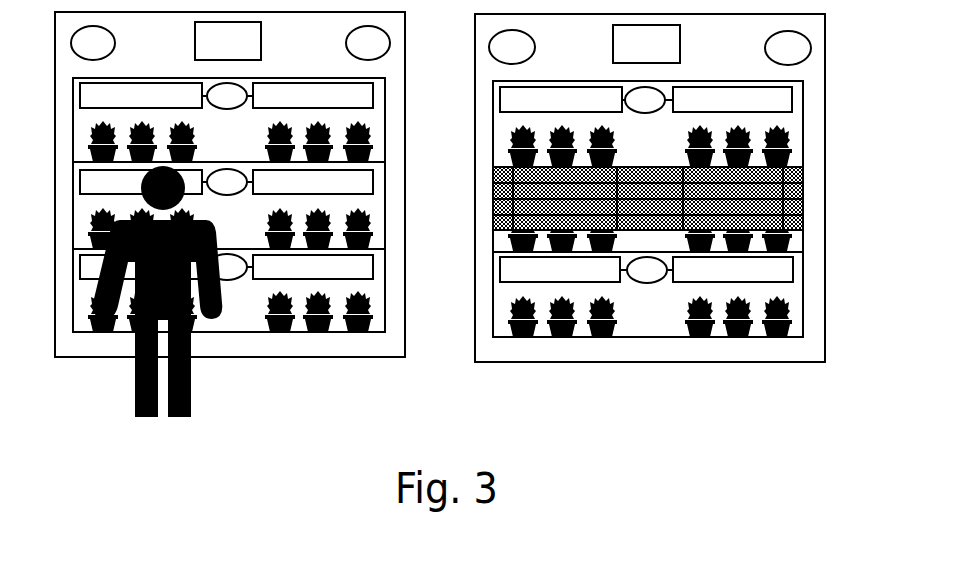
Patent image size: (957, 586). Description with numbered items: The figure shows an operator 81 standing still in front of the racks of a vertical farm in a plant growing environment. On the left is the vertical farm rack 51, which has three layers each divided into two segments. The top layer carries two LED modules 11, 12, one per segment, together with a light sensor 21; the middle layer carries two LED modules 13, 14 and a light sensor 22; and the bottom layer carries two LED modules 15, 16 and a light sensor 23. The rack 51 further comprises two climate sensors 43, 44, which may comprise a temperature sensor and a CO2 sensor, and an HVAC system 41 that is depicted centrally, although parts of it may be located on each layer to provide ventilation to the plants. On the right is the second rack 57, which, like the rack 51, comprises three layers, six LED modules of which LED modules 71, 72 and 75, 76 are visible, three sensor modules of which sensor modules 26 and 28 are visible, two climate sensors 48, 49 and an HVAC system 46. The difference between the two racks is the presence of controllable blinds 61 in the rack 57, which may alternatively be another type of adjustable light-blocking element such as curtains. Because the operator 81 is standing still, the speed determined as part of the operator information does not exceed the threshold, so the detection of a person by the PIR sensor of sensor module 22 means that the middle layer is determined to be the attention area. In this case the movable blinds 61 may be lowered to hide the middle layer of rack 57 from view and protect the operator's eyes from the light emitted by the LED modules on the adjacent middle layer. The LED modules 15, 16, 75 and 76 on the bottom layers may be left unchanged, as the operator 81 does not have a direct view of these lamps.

The LED module 11 is at (141, 96).
The LED module 12 is at (313, 96).
The LED module 13 is at (141, 182).
The LED module 14 is at (313, 182).
The LED module 15 is at (141, 267).
The LED module 16 is at (313, 267).
The light sensor 21 is at (227, 96).
The light sensor 22 is at (227, 182).
The light sensor 23 is at (227, 267).
The sensor module 26 is at (647, 100).
The sensor module 28 is at (646, 270).
The HVAC system 41 is at (228, 41).
The climate sensor 43 is at (93, 43).
The climate sensor 44 is at (368, 43).
The HVAC system 46 is at (646, 44).
The climate sensor 48 is at (512, 47).
The climate sensor 49 is at (788, 48).
The vertical farm rack 51 is at (407, 302).
The rack 57 is at (827, 213).
The controllable blinds 61 is at (493, 215).
The LED module 71 is at (561, 100).
The LED module 72 is at (732, 100).
The LED module 75 is at (560, 270).
The LED module 76 is at (733, 270).
The operator 81 is at (191, 413).